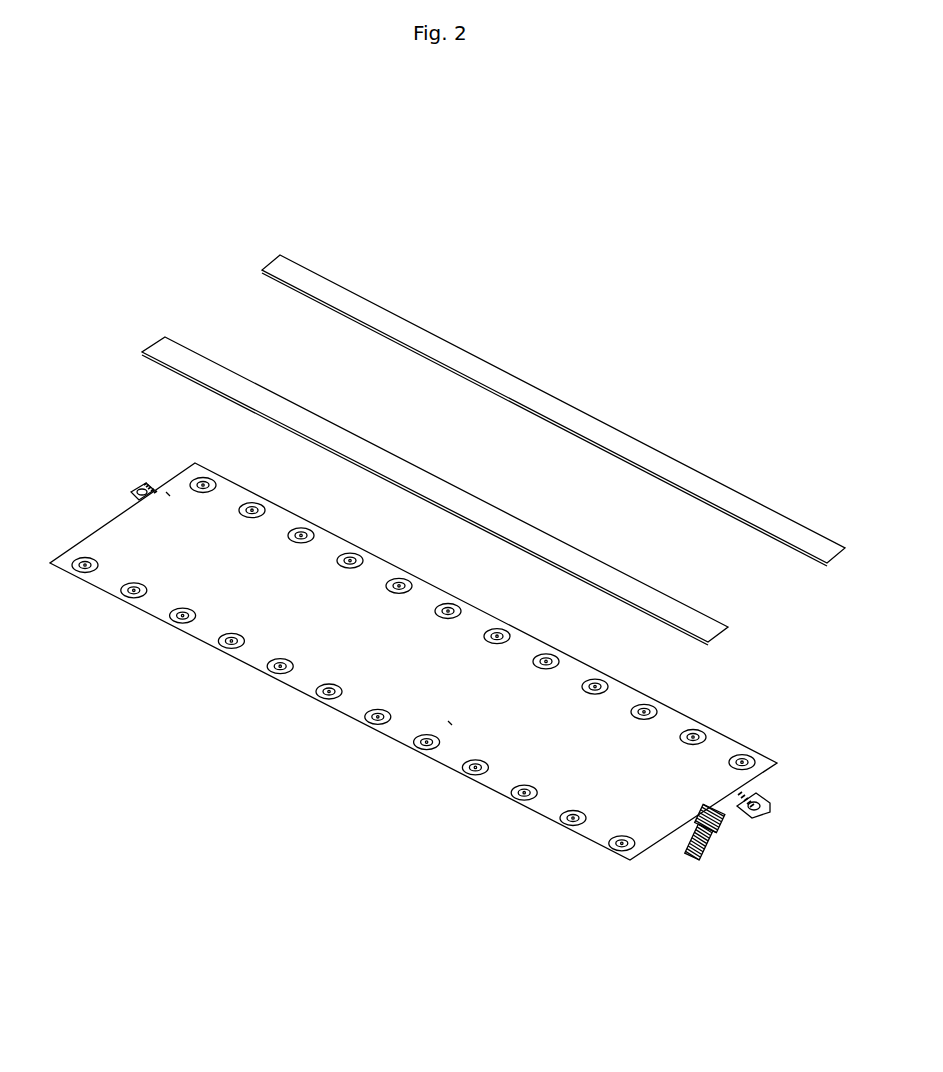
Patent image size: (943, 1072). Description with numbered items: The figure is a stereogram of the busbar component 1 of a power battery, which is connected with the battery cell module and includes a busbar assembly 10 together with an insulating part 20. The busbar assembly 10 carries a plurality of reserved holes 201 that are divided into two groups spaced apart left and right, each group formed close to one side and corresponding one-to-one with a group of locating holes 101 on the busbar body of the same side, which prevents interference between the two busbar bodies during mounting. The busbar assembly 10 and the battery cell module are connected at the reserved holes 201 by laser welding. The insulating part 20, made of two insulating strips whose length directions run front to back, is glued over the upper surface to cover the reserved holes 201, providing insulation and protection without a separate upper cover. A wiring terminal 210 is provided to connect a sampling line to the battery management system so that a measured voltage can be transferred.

The busbar component 1 is at (745, 365).
The busbar assembly 10 is at (401, 640).
The locating hole 101 is at (420, 752).
The insulating part 20 is at (133, 178).
The reserved hole 201 is at (279, 676).
The wiring terminal 210 is at (702, 848).